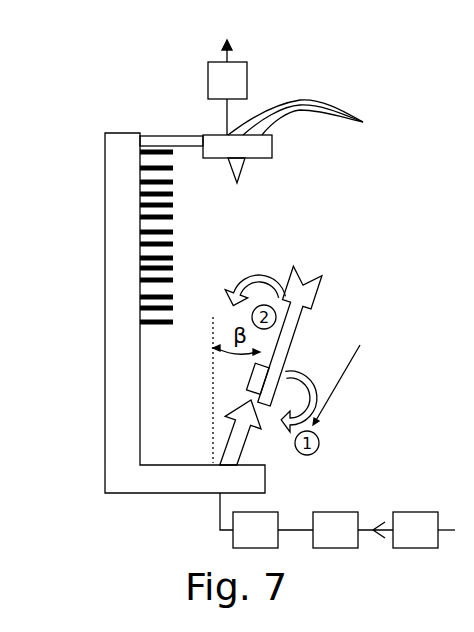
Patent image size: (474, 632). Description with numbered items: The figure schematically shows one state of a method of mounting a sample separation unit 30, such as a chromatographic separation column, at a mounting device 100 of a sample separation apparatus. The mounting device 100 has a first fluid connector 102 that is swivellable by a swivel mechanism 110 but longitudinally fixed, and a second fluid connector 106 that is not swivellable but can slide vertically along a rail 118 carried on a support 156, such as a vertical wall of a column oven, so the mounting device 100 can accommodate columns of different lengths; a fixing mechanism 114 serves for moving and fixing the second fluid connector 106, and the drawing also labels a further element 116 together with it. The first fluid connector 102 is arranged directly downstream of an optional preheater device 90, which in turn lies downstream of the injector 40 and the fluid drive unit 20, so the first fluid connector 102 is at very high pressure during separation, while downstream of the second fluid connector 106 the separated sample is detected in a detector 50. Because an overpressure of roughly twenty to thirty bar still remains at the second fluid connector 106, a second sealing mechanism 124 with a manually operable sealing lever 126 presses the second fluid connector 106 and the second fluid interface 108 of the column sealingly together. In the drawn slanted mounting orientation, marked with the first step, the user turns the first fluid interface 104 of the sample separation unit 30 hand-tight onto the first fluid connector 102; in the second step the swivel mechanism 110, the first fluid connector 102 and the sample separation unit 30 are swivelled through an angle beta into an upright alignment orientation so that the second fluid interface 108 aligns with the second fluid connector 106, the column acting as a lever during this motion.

The mounting device 100 is at (101, 87).
The support 156 is at (122, 282).
The rail 118 is at (172, 205).
The second fluid connector 106 is at (245, 165).
The detector 50 is at (227, 87).
The fixing mechanism 114 is at (295, 73).
The second sealing mechanism 124 is at (323, 94).
The second arm 116 is at (342, 88).
The sealing lever 126 is at (344, 107).
The second fluid interface 108 is at (253, 319).
The sample separation unit 30 is at (297, 345).
The first fluid interface 104 is at (247, 391).
The swivel mechanism 110 is at (275, 262).
The first fluid connector 102 is at (250, 404).
The preheater device 90 is at (249, 520).
The injector 40 is at (335, 530).
The fluid drive unit 20 is at (424, 530).